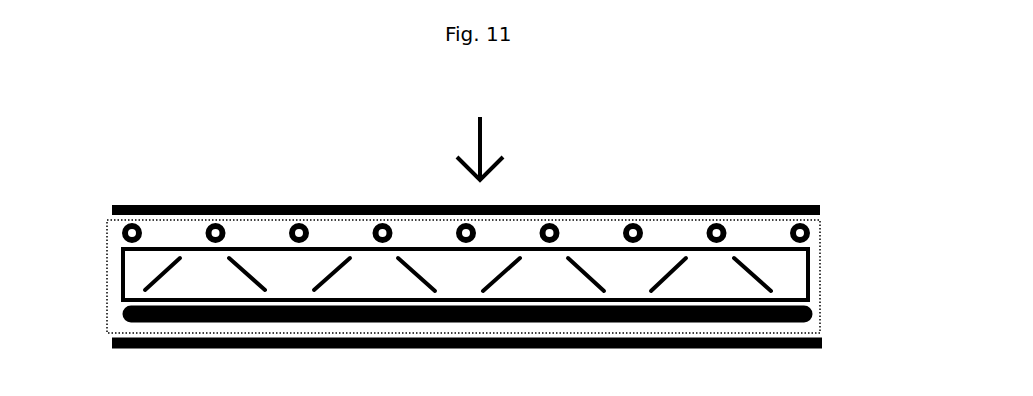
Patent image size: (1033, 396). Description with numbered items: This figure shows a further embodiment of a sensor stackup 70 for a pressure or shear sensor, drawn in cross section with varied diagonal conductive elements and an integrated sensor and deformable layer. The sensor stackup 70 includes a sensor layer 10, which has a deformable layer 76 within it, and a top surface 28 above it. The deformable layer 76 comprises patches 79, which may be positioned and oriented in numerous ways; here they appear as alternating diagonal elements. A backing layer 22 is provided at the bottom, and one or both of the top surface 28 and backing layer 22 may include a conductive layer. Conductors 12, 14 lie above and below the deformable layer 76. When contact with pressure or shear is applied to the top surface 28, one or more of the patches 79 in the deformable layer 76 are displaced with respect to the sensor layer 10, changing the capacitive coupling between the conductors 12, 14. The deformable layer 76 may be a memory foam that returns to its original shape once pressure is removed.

The sensor stackup 70 is at (480, 133).
The top surface 28 is at (820, 208).
The sensor layer 10 is at (820, 316).
The conductor 12 is at (123, 232).
The deformable layer 76 is at (123, 279).
The patch 79 is at (155, 272).
The conductor 14 is at (123, 317).
The backing layer 22 is at (822, 343).